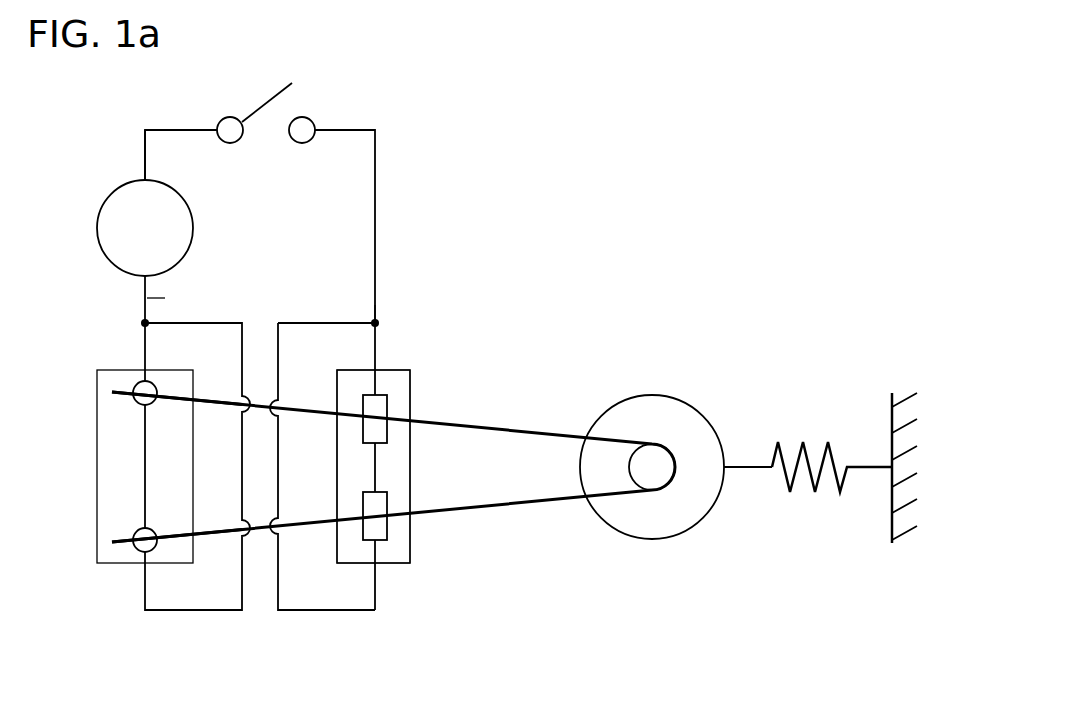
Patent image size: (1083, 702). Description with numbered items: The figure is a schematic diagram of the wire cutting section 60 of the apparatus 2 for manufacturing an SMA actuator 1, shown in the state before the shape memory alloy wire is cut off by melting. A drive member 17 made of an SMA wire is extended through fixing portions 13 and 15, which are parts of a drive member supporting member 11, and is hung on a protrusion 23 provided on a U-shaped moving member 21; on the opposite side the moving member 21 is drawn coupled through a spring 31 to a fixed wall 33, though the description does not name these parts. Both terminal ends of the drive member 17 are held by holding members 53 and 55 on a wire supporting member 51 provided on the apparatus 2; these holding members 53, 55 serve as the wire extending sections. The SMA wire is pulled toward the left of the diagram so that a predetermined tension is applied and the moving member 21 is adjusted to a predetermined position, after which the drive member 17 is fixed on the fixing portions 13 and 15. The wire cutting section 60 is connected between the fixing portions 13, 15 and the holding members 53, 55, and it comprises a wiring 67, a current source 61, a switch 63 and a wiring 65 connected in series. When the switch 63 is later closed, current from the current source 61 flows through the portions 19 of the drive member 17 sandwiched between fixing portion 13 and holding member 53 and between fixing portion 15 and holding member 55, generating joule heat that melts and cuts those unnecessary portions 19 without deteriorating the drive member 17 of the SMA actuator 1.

The SMA actuator 1 is at (835, 348).
The apparatus for manufacturing the SMA actuator 2 is at (507, 322).
The drive member supporting member 11 is at (407, 355).
The fixing portion 13 is at (395, 404).
The fixing portion 15 is at (395, 522).
The drive member 17 is at (505, 428).
The portion of the drive member 19 is at (221, 523).
The moving member 21 is at (652, 395).
The protrusion 23 is at (660, 458).
The spring 31 is at (803, 442).
The fixed wall 33 is at (892, 425).
The wire supporting member 51 is at (117, 356).
The holding member 53 is at (145, 405).
The holding member 55 is at (145, 528).
The wire cutting section 60 is at (394, 174).
The current source 61 is at (193, 228).
The switch 63 is at (268, 97).
The wiring 65 is at (375, 305).
The wiring 67 is at (198, 323).